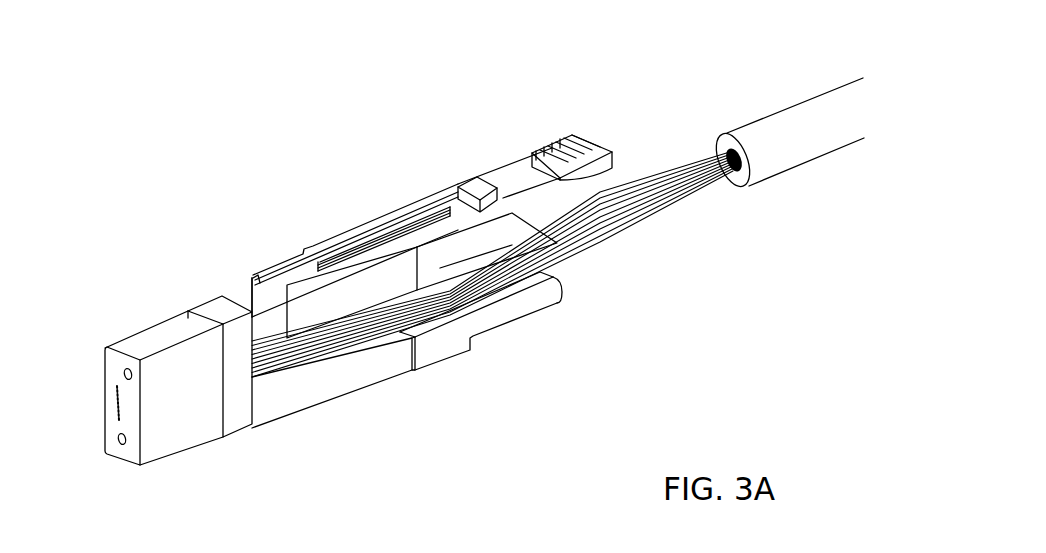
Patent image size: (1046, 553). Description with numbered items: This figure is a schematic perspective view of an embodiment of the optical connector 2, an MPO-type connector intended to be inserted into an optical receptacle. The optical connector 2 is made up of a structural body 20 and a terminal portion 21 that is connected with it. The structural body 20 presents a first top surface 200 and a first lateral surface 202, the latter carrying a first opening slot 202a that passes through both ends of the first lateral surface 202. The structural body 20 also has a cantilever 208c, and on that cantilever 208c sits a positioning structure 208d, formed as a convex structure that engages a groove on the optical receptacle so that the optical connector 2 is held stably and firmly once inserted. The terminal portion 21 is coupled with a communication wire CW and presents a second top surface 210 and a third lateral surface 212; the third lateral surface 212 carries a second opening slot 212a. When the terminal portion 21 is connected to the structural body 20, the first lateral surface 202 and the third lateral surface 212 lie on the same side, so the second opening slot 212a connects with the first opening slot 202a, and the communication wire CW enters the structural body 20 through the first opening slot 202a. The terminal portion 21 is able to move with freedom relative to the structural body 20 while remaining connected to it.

The optical connector 2 is at (184, 133).
The structural body 20 is at (490, 135).
The terminal portion 21 is at (116, 290).
The first top surface 200 is at (360, 240).
The first lateral surface 202 is at (378, 365).
The first opening slot 202a is at (432, 330).
The cantilever 208c is at (587, 147).
The positioning structure 208d is at (478, 195).
The second top surface 210 is at (237, 313).
The third lateral surface 212 is at (243, 396).
The second opening slot 212a is at (275, 385).
The communication wire CW is at (791, 150).